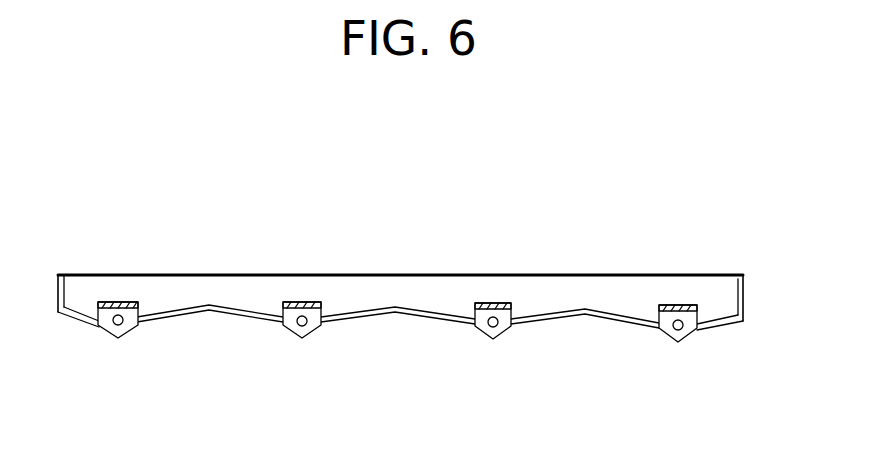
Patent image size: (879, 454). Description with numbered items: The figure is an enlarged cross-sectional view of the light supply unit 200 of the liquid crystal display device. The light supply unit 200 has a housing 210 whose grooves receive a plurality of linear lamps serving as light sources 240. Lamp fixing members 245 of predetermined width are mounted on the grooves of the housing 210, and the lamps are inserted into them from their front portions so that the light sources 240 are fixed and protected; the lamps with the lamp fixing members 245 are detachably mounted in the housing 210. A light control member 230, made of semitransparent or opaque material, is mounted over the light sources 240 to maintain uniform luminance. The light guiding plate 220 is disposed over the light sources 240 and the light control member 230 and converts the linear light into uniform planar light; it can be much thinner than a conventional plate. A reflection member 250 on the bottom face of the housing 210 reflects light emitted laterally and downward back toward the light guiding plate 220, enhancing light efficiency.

The light supply unit 200 is at (85, 150).
The housing 210 is at (690, 273).
The light guiding plate 220 is at (132, 280).
The light control member 230 is at (698, 305).
The light source 240 is at (298, 339).
The lamp fixing member 245 is at (462, 322).
The reflection member 250 is at (620, 329).